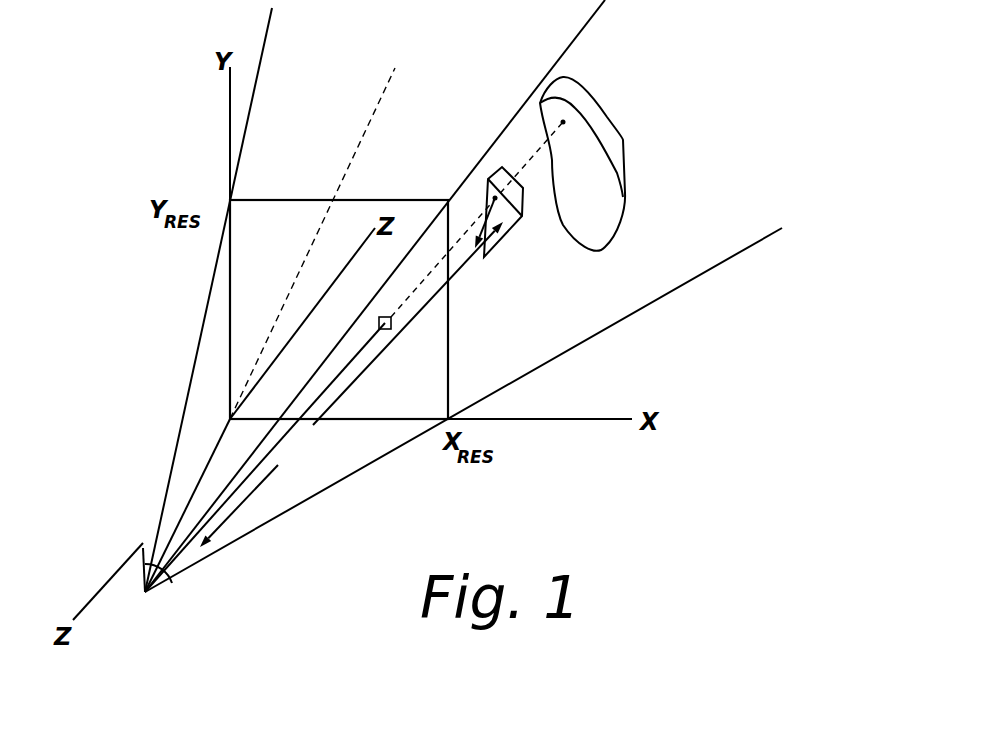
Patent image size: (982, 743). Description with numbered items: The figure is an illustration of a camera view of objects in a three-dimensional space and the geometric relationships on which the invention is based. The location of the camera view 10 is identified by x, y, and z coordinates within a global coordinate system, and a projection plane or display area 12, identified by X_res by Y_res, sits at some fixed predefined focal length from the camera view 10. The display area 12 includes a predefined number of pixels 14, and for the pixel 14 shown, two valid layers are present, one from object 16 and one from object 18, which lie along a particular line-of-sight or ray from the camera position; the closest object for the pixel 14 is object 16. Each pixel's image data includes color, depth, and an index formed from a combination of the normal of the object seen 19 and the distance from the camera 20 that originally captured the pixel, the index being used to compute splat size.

The camera view 10 is at (169, 605).
The display area 12 is at (448, 382).
The pixel 14 is at (391, 324).
The object 16 is at (506, 240).
The object 18 is at (611, 121).
The normal of the object seen 19 is at (483, 225).
The distance from the camera 20 is at (351, 384).